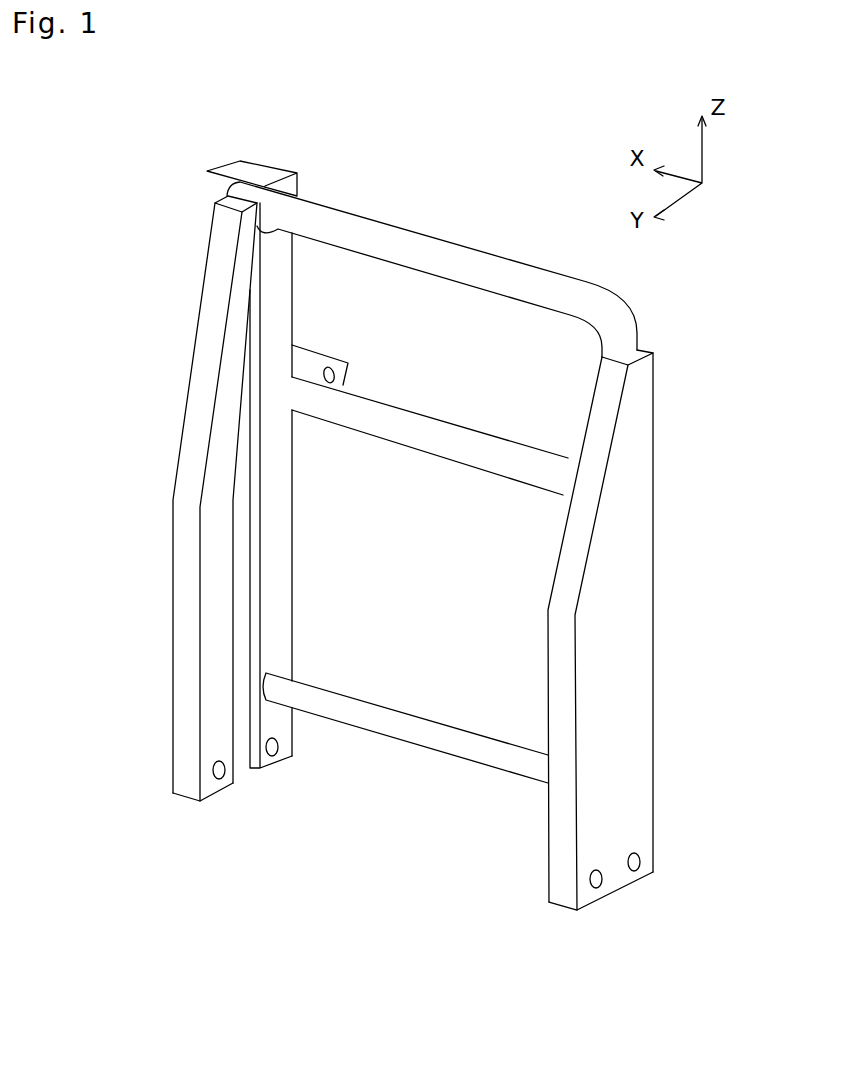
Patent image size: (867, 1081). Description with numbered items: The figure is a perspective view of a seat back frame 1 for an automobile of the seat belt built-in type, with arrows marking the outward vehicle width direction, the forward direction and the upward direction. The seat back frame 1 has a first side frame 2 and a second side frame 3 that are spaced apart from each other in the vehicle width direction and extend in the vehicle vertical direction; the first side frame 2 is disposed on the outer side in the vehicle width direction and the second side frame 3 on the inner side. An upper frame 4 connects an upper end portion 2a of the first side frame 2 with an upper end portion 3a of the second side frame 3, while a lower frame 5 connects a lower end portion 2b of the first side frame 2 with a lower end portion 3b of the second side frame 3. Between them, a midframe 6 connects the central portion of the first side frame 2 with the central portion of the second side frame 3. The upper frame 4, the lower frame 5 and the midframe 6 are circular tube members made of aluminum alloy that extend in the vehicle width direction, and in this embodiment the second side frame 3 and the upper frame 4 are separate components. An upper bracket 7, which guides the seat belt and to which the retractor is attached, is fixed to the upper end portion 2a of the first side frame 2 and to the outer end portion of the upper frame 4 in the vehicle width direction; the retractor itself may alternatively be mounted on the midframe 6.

The seat back frame 1 is at (177, 170).
The first side frame 2 is at (203, 303).
The upper end portion of the first side frame 2a is at (215, 205).
The lower end portion of the first side frame 2b is at (185, 792).
The second side frame 3 is at (653, 560).
The upper end portion of the second side frame 3a is at (653, 373).
The lower end portion of the second side frame 3b is at (653, 827).
The upper frame 4 is at (383, 230).
The lower frame 5 is at (393, 717).
The midframe 6 is at (428, 420).
The upper bracket 7 is at (242, 166).